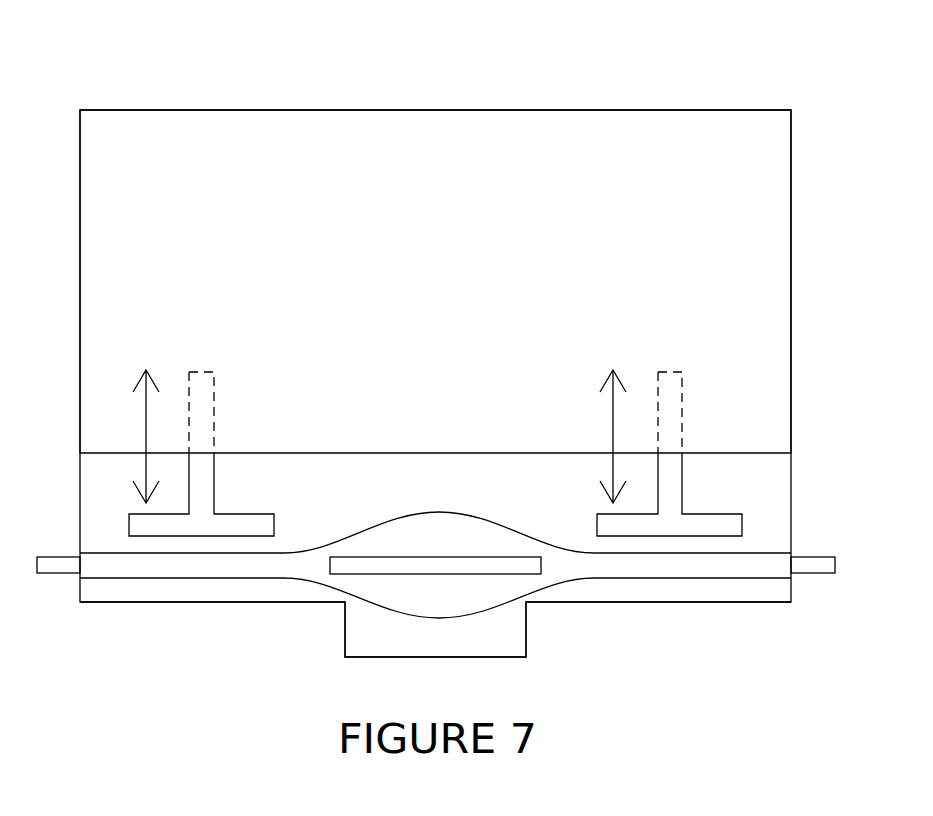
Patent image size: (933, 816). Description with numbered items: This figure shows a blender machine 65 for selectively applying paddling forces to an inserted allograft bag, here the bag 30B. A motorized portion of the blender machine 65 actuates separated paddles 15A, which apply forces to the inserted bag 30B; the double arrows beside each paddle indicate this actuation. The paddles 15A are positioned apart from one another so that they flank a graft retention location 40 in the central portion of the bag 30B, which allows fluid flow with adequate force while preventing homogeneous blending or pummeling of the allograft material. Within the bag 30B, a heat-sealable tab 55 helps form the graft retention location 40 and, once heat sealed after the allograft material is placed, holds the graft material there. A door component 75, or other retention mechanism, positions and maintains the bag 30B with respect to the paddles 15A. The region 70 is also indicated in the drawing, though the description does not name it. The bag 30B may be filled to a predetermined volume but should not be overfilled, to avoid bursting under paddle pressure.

The blender machine 65 is at (709, 99).
The housing 70 is at (436, 210).
The paddles 15A is at (705, 497).
The graft retention location 40 is at (483, 519).
The heat-sealable tab 55 is at (469, 580).
The door component 75 is at (341, 660).
The bag 30B is at (816, 578).